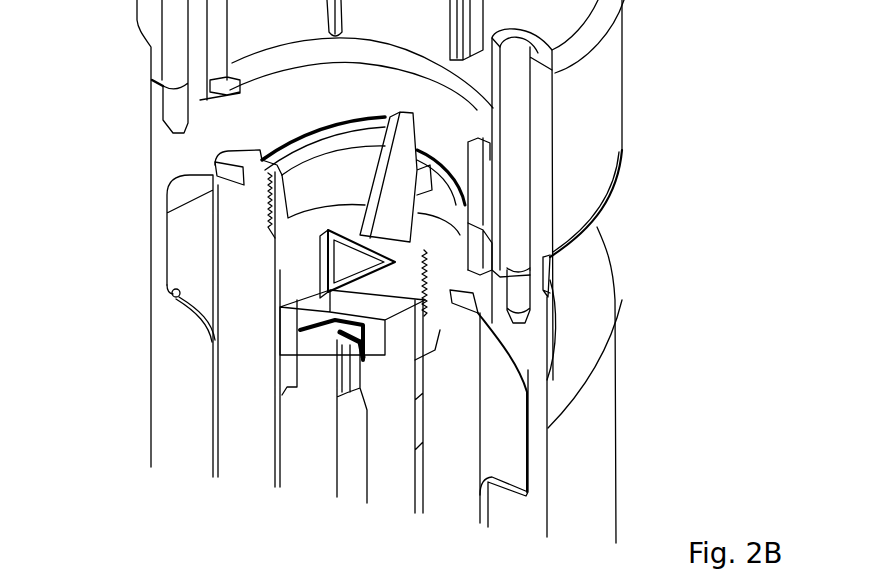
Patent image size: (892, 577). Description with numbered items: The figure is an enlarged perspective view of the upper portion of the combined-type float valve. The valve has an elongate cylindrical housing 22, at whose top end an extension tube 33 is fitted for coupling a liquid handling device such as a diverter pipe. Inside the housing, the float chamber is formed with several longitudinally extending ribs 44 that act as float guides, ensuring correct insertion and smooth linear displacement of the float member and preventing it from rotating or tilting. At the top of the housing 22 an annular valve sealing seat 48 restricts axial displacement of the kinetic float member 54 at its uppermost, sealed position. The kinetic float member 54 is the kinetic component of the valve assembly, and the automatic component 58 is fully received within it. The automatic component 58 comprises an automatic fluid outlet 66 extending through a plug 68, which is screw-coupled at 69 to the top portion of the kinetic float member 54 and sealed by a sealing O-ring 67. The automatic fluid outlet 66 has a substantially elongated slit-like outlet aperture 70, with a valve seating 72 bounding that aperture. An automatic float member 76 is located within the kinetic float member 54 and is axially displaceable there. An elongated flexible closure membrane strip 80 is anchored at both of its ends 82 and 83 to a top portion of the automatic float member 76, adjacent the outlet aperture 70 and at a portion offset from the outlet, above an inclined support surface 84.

The housing 22 is at (607, 460).
The extension tube 33 is at (602, 72).
The longitudinally extending ribs 44 is at (507, 513).
The annular valve sealing seat 48 is at (400, 293).
The kinetic float member 54 is at (453, 352).
The automatic component 58 is at (457, 148).
The automatic fluid outlet 66 is at (345, 262).
The sealing O-ring 67 is at (214, 165).
The plug 68 is at (315, 185).
The screw coupling 69 is at (267, 200).
The outlet aperture 70 is at (400, 212).
The valve seating 72 is at (416, 280).
The automatic float member 76 is at (550, 423).
The flexible closure membrane strip 80 is at (282, 292).
The first anchored end 82 is at (400, 303).
The second anchored end 83 is at (300, 325).
The inclined support surface 84 is at (360, 388).